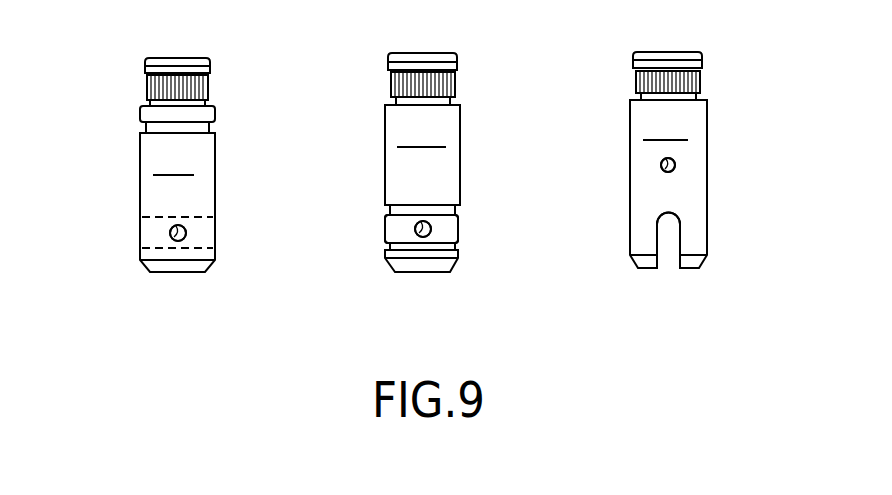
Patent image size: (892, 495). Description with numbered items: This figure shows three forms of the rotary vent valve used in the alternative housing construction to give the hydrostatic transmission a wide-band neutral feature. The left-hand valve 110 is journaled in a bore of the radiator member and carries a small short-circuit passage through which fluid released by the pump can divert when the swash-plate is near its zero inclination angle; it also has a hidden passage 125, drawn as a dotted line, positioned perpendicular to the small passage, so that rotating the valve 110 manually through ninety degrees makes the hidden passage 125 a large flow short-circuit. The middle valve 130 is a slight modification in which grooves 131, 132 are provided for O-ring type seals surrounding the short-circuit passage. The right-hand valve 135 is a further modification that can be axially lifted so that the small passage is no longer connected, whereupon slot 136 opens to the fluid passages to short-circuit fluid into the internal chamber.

The rotary vent valve 110 is at (177, 165).
The hidden passage 125 is at (197, 243).
The valve 130 is at (422, 162).
The groove 131 is at (454, 208).
The groove 132 is at (448, 251).
The valve 135 is at (668, 160).
The slot 136 is at (670, 232).